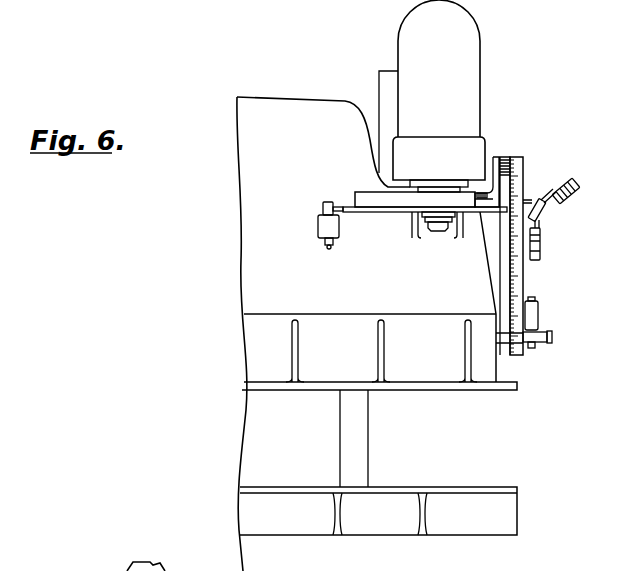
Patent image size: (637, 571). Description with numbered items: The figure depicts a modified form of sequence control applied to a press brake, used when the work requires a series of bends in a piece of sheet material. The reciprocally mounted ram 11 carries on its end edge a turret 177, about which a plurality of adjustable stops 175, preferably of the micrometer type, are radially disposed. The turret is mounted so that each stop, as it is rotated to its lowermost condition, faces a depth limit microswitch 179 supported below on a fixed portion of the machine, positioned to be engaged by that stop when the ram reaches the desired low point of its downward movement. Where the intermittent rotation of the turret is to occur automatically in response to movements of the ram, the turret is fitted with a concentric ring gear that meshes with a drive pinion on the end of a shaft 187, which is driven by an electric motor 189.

The ram 11 is at (250, 153).
The shaft 187 is at (371, 213).
The electric motor 189 is at (318, 227).
The adjustable stops 175 is at (565, 188).
The turret 177 is at (540, 216).
The depth limit microswitch 179 is at (538, 312).